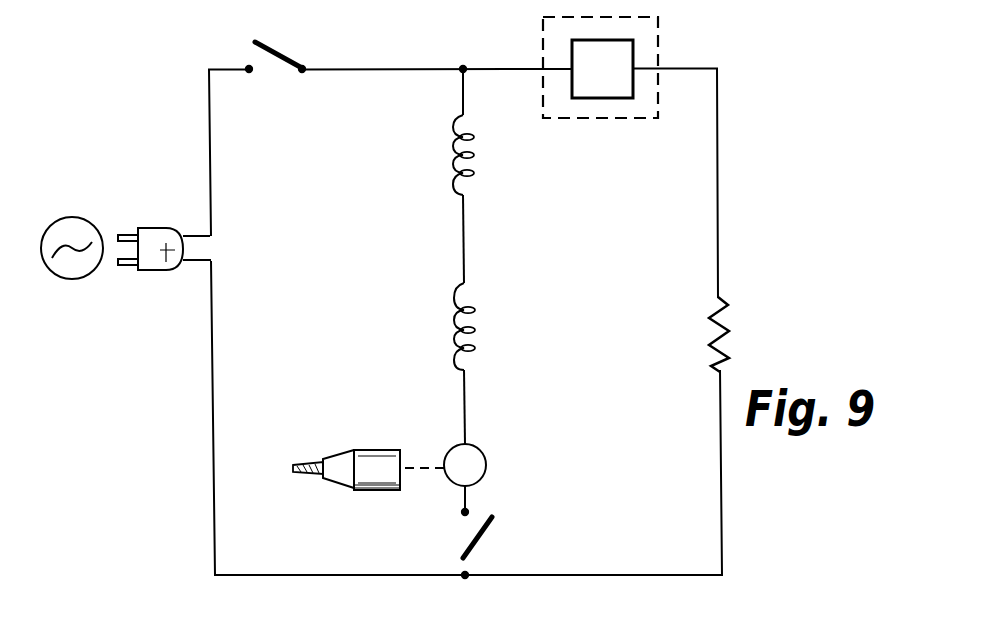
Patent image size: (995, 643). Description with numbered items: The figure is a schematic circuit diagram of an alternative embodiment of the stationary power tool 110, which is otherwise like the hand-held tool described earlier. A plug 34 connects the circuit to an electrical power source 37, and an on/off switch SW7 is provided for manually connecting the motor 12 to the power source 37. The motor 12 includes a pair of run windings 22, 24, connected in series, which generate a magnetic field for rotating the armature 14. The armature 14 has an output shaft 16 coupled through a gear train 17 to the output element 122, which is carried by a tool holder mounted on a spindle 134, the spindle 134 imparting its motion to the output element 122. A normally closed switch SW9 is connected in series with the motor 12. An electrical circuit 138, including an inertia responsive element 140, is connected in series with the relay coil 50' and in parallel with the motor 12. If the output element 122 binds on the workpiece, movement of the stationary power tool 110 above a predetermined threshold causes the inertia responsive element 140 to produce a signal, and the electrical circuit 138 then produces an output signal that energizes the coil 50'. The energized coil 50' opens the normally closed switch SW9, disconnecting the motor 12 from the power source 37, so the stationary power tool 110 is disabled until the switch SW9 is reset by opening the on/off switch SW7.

The stationary power tool 110 is at (185, 353).
The on/off switch SW7 is at (280, 76).
The electrical power source 37 is at (82, 225).
The plug 34 is at (164, 262).
The run winding 24 is at (456, 153).
The run winding 22 is at (456, 310).
The electrical circuit 138 is at (660, 35).
The inertia responsive element 140 is at (610, 90).
The relay coil 50' is at (671, 334).
The electric motor 12 is at (372, 235).
The armature 14 is at (486, 468).
The normally closed switch SW9 is at (493, 530).
The output shaft 16 is at (423, 470).
The gear train 17 is at (390, 455).
The spindle 134 is at (344, 455).
The output element 122 is at (309, 477).